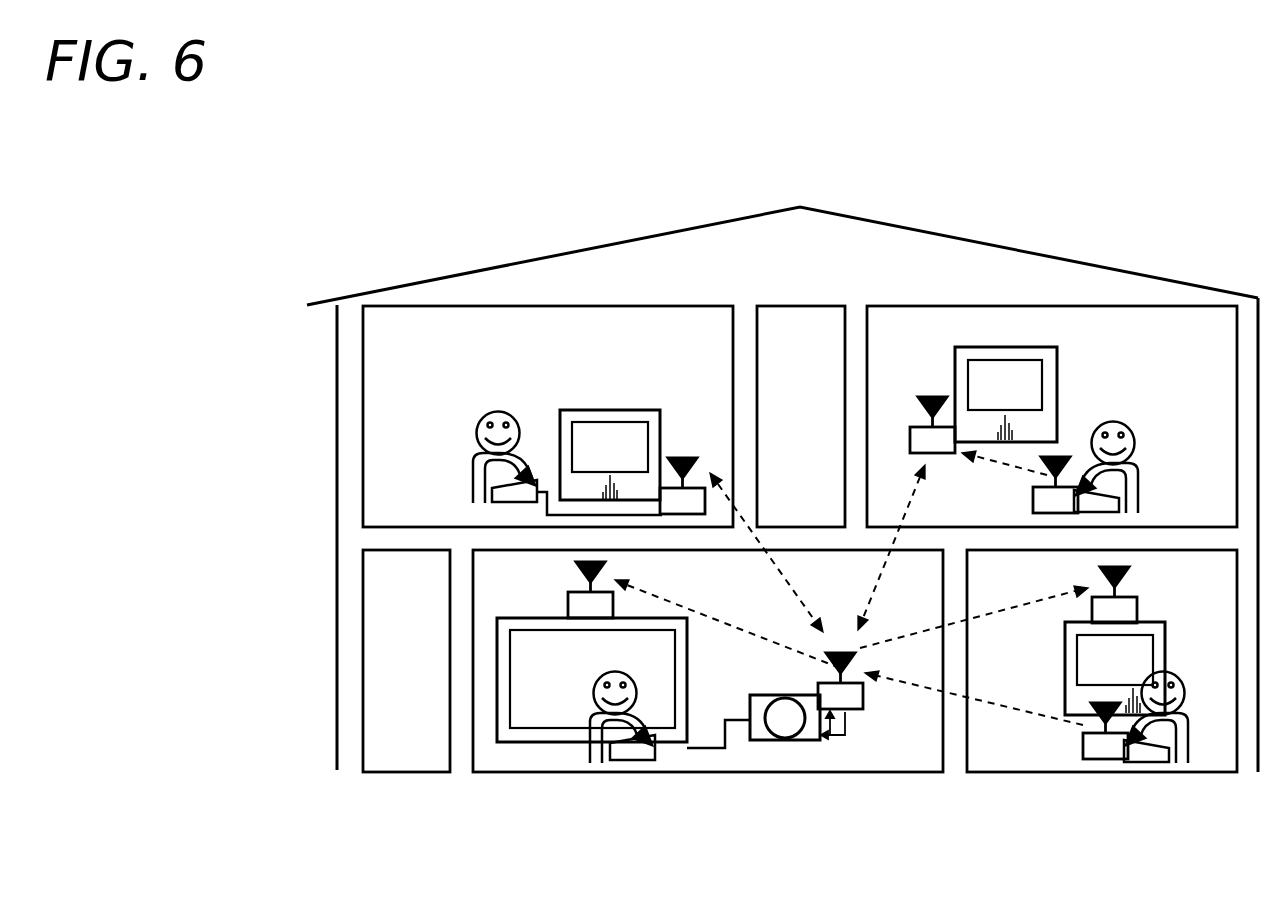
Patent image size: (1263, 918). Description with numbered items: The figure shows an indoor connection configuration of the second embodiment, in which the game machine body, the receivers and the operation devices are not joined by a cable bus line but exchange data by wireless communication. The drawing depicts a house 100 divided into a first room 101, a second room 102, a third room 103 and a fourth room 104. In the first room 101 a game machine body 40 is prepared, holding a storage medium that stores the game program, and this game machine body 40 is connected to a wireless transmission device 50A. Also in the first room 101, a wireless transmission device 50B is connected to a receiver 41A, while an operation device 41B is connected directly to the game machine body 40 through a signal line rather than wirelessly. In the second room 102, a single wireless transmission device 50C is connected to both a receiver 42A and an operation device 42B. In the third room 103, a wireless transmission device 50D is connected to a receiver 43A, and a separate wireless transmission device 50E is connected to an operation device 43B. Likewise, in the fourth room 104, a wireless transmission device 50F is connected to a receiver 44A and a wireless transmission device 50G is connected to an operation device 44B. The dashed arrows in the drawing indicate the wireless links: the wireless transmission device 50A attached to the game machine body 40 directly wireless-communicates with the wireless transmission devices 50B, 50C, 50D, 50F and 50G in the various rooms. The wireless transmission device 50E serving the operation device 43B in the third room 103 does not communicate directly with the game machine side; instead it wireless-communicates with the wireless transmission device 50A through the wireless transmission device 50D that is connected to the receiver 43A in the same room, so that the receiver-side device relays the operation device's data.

The house 100 is at (992, 243).
The first room 101 is at (510, 773).
The second room 102 is at (675, 305).
The third room 103 is at (897, 305).
The fourth room 104 is at (1020, 774).
The game machine body 40 is at (742, 742).
The receiver 41A is at (690, 683).
The operation device 41B is at (632, 761).
The receiver 42A is at (640, 410).
The operation device 42B is at (537, 482).
The receiver 43A is at (1058, 367).
The operation device 43B is at (1083, 494).
The receiver 44A is at (1145, 622).
The operation device 44B is at (1147, 761).
The wireless transmission device 50A is at (863, 695).
The wireless transmission device 50B is at (575, 568).
The wireless transmission device 50C is at (681, 458).
The wireless transmission device 50D is at (930, 395).
The wireless transmission device 50E is at (1033, 492).
The wireless transmission device 50F is at (1128, 572).
The wireless transmission device 50G is at (1082, 744).